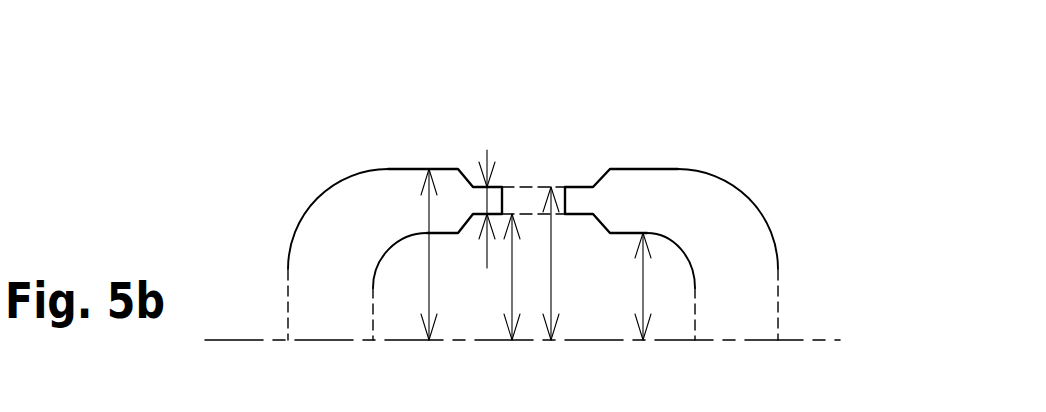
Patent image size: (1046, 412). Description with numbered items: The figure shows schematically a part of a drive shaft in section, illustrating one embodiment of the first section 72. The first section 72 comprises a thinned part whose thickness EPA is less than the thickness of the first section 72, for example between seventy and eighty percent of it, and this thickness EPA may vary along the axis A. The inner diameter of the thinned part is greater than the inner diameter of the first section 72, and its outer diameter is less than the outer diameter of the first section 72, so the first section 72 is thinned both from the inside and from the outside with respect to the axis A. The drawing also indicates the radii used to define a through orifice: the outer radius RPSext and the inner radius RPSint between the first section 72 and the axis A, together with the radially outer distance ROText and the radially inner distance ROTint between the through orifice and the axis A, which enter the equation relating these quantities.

The first section 72 is at (756, 197).
The axis A is at (817, 341).
The outer radius RPSext is at (430, 272).
The inner radius RPSint is at (646, 296).
The thickness of the thinned part EPA is at (487, 148).
The radially inner distance ROTint is at (512, 277).
The radially outer distance ROText is at (552, 263).